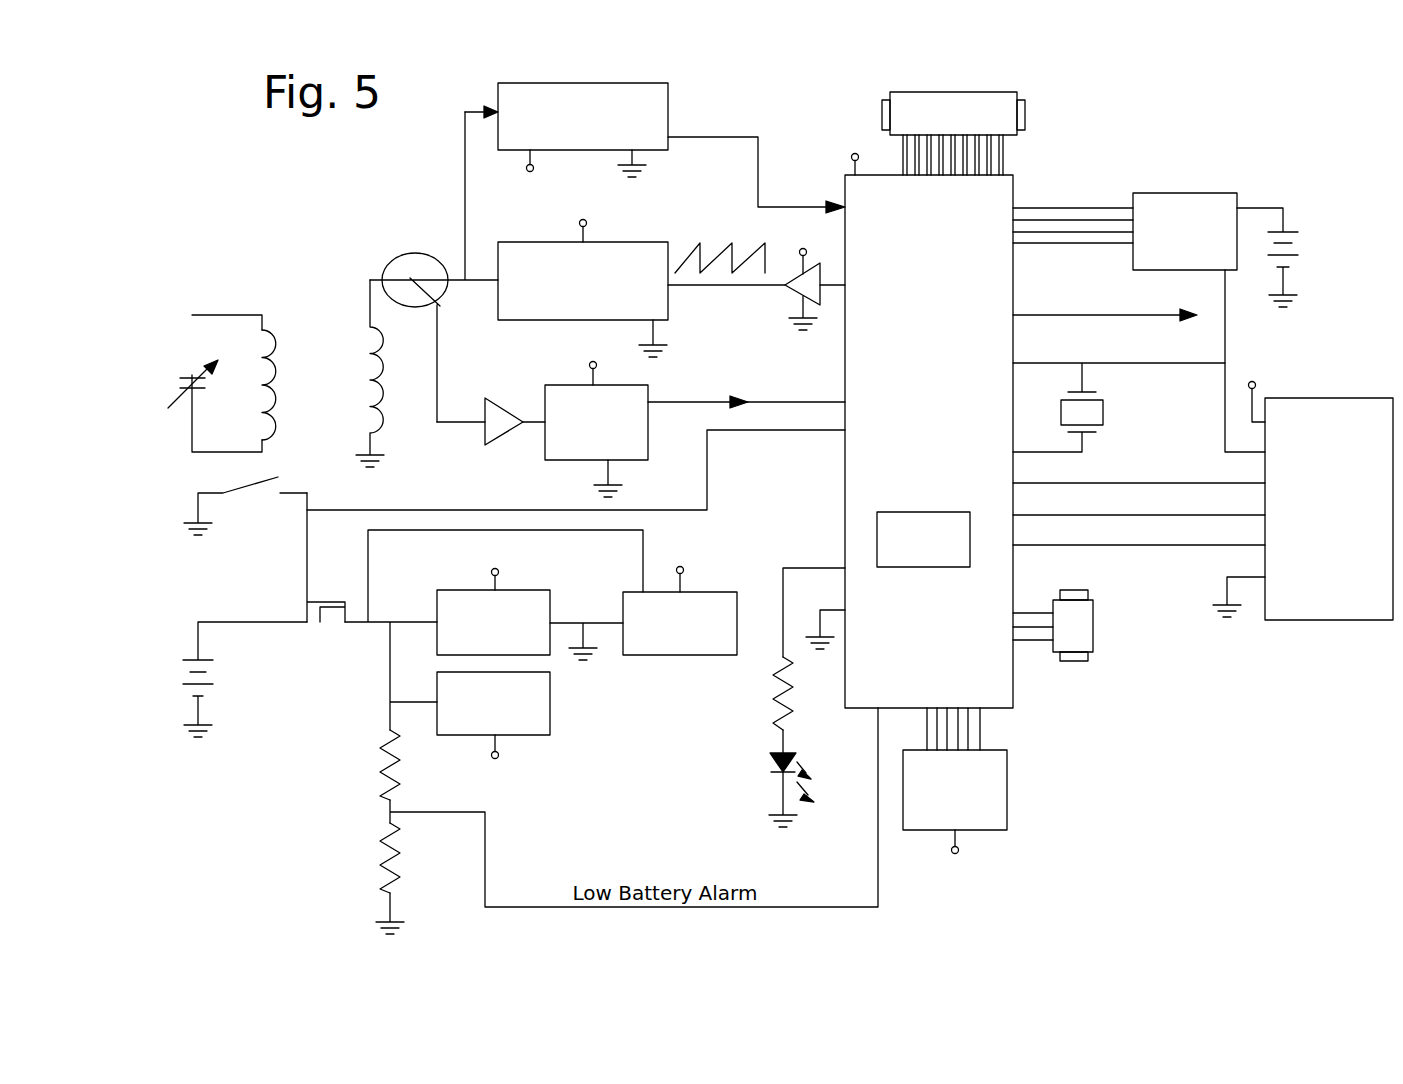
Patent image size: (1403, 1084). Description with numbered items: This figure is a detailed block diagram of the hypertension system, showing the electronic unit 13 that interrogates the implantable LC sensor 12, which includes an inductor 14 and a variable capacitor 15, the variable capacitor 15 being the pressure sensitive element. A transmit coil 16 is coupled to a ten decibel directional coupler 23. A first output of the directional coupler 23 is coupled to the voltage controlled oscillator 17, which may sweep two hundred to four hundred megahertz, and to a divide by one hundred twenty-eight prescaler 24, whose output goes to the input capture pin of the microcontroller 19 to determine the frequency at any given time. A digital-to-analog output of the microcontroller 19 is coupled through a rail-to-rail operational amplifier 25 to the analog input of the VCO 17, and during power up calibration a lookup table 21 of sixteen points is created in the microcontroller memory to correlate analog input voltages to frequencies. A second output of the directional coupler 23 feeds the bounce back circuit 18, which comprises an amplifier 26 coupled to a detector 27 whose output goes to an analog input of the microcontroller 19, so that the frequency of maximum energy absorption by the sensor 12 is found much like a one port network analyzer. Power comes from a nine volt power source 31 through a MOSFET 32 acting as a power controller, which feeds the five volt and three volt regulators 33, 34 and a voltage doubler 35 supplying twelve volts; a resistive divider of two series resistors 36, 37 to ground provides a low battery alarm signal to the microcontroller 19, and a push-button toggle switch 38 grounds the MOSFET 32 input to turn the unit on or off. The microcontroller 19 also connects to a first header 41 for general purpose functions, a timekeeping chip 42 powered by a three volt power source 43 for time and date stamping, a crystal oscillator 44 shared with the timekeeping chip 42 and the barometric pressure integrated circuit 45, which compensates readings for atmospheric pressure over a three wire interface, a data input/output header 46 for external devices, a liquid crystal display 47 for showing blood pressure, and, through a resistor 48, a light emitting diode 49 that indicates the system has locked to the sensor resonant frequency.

The implantable LC sensor 12 is at (241, 344).
The electronic unit 13 is at (387, 289).
The inductor 14 is at (279, 340).
The variable capacitor 15 is at (206, 389).
The transmit coil 16 is at (368, 356).
The voltage controlled oscillator 17 is at (517, 242).
The bounce back circuit 18 is at (627, 417).
The microcontroller 19 is at (786, 418).
The lookup table 21 is at (909, 512).
The directional coupler 23 is at (412, 255).
The prescaler 24 is at (497, 101).
The operational amplifier 25 is at (790, 296).
The amplifier 26 is at (488, 401).
The detector 27 is at (563, 385).
The power source 31 is at (210, 662).
The MOSFET 32 is at (333, 600).
The five volt regulator 33 is at (436, 604).
The three volt regulator 34 is at (551, 701).
The voltage doubler 35 is at (733, 592).
The series resistor 36 is at (378, 751).
The series resistor 37 is at (378, 848).
The push-button toggle switch 38 is at (253, 494).
The first header 41 is at (1026, 116).
The timekeeping chip 42 is at (1148, 193).
The three volt power source 43 is at (1293, 232).
The crystal oscillator 44 is at (1105, 412).
The barometric pressure integrated circuit 45 is at (1332, 398).
The data input/output header 46 is at (1096, 626).
The liquid crystal display 47 is at (1008, 800).
The resistor 48 is at (776, 701).
The light emitting diode 49 is at (772, 759).